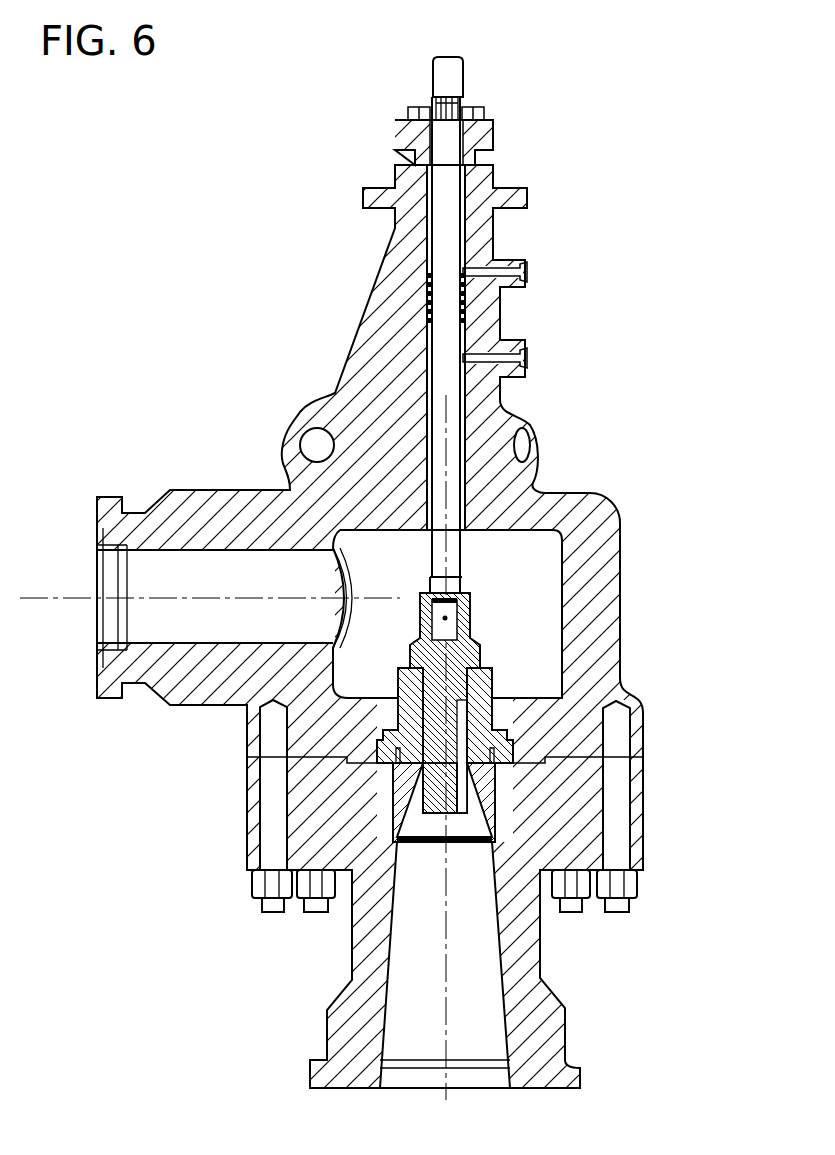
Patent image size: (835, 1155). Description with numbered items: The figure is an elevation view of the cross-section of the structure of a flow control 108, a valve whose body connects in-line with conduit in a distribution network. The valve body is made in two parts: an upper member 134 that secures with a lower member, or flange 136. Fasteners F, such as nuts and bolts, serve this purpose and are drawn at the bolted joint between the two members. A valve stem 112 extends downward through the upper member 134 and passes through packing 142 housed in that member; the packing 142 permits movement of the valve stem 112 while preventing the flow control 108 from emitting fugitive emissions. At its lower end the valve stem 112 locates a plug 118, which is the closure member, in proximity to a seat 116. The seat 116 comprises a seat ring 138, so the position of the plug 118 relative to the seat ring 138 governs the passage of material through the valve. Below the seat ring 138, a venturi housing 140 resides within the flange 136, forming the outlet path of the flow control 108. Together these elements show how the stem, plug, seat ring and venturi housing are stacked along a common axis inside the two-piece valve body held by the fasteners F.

The flow control 108 is at (565, 98).
The valve stem 112 is at (455, 368).
The seat 116 is at (620, 680).
The plug 118 is at (495, 643).
The upper member 134 is at (185, 490).
The flange 136 is at (570, 1045).
The seat ring 138 is at (548, 688).
The venturi housing 140 is at (500, 822).
The packing 142 is at (466, 322).
The fasteners F is at (262, 902).